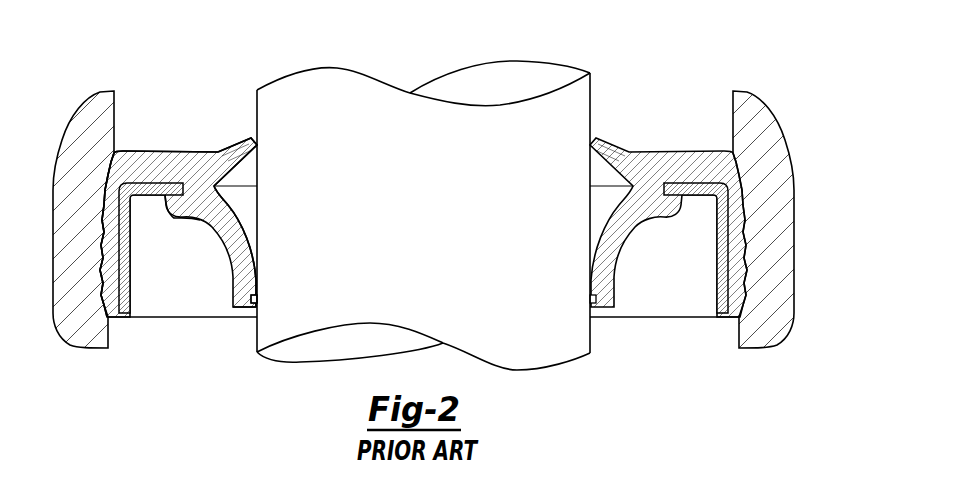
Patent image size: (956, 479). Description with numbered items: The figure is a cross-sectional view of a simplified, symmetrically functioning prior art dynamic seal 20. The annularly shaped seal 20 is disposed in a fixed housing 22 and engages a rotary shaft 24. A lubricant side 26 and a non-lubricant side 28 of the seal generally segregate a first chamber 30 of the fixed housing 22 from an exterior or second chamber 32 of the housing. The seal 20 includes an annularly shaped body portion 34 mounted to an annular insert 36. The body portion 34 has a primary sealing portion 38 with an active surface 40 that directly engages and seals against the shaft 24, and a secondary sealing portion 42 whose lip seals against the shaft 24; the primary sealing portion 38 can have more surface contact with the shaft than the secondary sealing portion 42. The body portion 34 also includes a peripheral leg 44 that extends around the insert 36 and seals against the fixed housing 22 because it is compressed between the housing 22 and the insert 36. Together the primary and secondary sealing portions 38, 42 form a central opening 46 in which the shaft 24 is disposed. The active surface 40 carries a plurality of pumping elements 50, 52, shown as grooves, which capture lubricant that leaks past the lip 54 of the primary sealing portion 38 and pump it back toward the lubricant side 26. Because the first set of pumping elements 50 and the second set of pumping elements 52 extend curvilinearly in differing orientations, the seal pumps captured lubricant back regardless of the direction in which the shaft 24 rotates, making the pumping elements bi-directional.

The dynamic seal 20 is at (196, 223).
The fixed housing 22 is at (91, 113).
The rotary shaft 24 is at (429, 217).
The lubricant side 26 is at (286, 417).
The non-lubricant side 28 is at (404, 52).
The first chamber 30 is at (175, 338).
The second chamber 32 is at (220, 208).
The body portion 34 is at (196, 188).
The annular insert 36 is at (128, 243).
The primary sealing portion 38 is at (233, 254).
The active surface 40 is at (264, 282).
The secondary sealing portion 42 is at (242, 159).
The peripheral leg 44 is at (137, 177).
The central opening 46 is at (264, 315).
The first set of pumping elements 50 is at (260, 299).
The second set of pumping elements 52 is at (254, 299).
The lip 54 is at (603, 312).